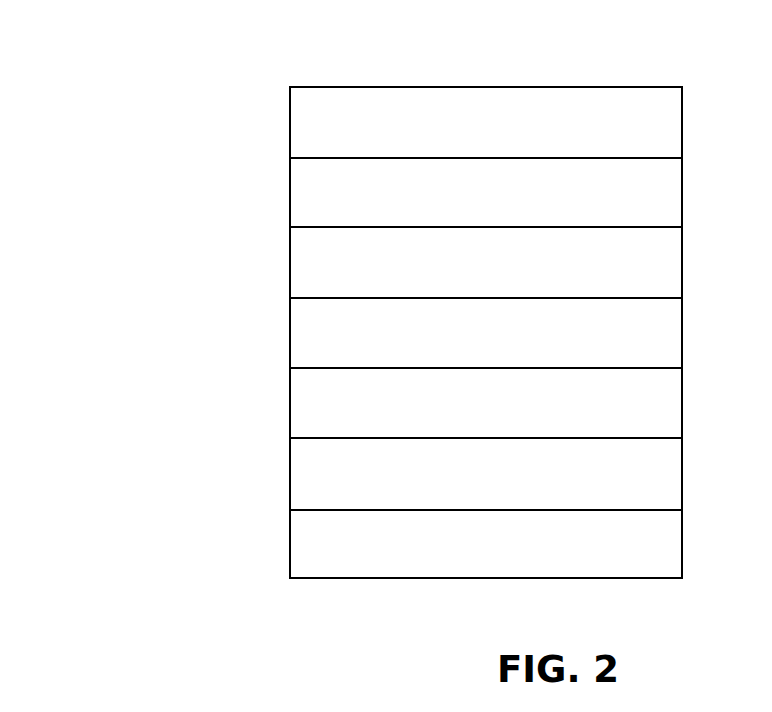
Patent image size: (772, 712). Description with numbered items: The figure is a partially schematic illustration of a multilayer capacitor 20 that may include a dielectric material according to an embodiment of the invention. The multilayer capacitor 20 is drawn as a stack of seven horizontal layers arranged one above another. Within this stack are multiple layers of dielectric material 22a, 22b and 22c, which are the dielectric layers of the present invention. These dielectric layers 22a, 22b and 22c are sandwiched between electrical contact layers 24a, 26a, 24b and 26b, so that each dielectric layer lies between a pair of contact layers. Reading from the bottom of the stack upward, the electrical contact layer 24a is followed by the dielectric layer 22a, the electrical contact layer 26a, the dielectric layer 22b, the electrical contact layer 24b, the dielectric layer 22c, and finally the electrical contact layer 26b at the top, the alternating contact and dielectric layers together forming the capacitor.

The multilayer capacitor 20 is at (200, 118).
The electrical contact layer 26b is at (630, 132).
The layer of dielectric material 22c is at (637, 197).
The electrical contact layer 24b is at (633, 272).
The layer of dielectric material 22b is at (632, 342).
The electrical contact layer 26a is at (628, 413).
The layer of dielectric material 22a is at (620, 485).
The electrical contact layer 24a is at (615, 552).